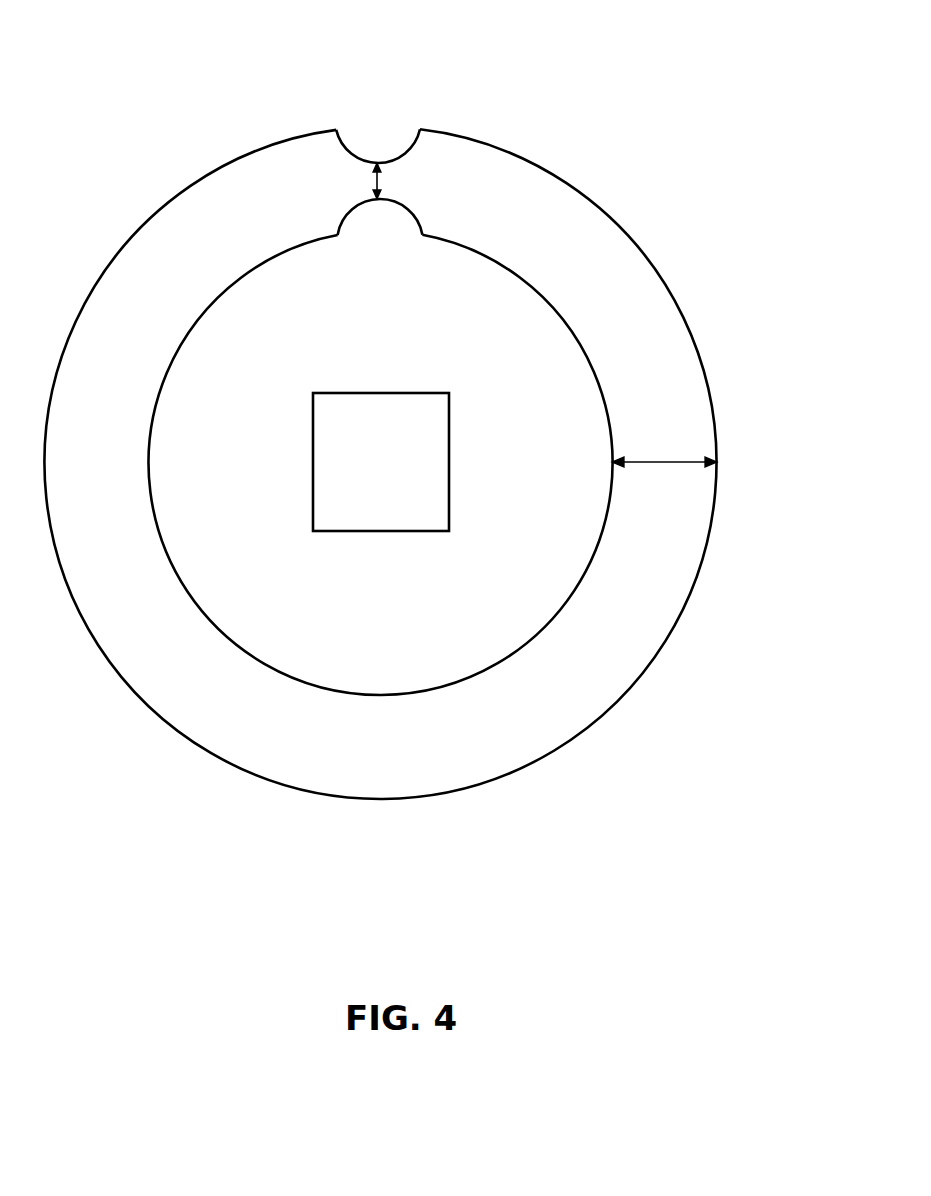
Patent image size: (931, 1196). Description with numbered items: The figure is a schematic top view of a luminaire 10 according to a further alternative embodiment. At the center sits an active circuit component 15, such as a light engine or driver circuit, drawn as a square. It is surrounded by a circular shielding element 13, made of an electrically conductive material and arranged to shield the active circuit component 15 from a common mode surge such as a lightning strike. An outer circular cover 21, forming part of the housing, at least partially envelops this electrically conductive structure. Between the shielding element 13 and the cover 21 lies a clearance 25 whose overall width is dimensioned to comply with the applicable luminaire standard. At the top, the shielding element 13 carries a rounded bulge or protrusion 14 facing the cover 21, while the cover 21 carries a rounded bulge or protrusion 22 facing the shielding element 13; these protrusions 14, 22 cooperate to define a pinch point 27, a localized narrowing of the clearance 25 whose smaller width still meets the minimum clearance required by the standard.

The luminaire 10 is at (430, 472).
The shielding element 13 is at (238, 280).
The bulge or protrusion 14 is at (380, 215).
The active circuit component 15 is at (382, 492).
The cover 21 is at (598, 203).
The bulge or protrusion 22 is at (388, 153).
The clearance 25 is at (677, 360).
The pinch point 27 is at (362, 183).